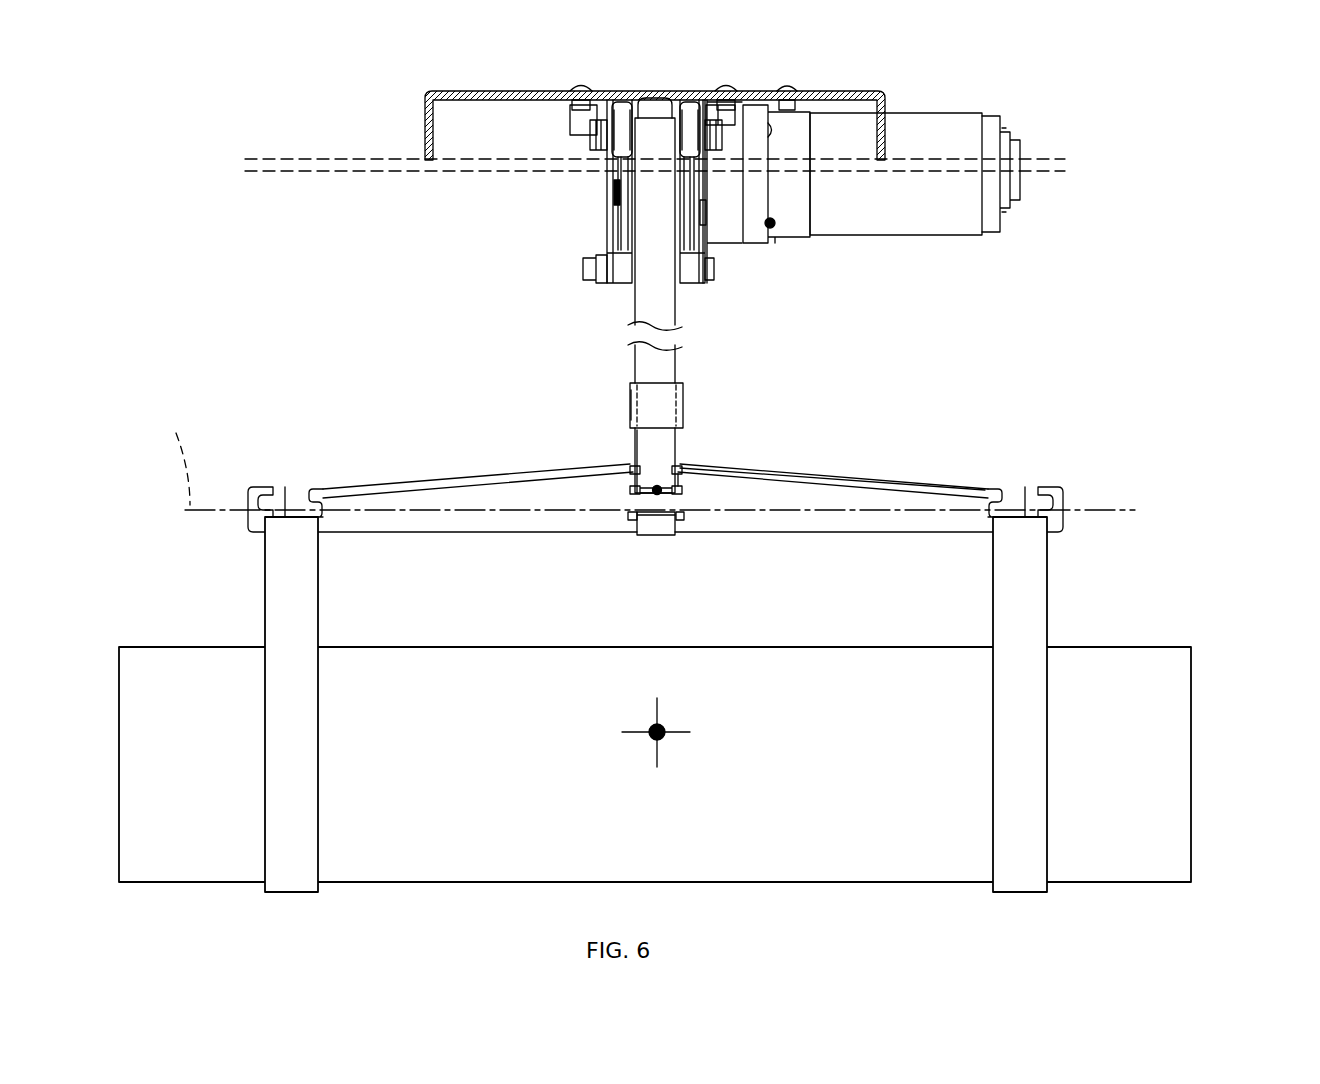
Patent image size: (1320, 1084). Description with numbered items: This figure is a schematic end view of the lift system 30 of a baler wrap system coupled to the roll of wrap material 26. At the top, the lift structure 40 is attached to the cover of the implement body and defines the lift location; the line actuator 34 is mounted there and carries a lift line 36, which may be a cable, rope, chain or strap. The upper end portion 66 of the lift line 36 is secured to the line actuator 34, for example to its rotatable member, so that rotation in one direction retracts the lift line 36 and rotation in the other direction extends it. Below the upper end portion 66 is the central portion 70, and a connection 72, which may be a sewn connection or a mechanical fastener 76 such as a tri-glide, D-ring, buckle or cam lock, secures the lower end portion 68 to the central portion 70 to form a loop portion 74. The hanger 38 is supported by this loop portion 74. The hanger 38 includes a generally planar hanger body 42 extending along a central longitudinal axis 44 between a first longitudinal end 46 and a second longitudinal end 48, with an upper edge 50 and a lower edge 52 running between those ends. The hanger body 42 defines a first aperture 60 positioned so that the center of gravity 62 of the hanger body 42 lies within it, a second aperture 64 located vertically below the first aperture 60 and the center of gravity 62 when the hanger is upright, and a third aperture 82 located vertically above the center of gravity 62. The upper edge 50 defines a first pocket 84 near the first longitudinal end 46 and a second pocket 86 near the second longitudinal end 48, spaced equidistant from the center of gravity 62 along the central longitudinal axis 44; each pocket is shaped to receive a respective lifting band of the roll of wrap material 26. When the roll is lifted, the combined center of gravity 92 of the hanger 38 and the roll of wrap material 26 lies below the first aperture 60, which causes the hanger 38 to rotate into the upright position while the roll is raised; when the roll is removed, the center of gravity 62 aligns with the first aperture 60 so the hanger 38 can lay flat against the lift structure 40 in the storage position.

The roll of wrap material 26 is at (1192, 798).
The lift system 30 is at (895, 255).
The line actuator 34 is at (933, 123).
The lift line 36 is at (678, 318).
The hanger 38 is at (905, 472).
The lift structure 40 is at (853, 98).
The hanger body 42 is at (848, 492).
The central longitudinal axis 44 is at (168, 454).
The first longitudinal end 46 is at (1063, 518).
The second longitudinal end 48 is at (250, 515).
The upper edge 50 is at (420, 482).
The lower edge 52 is at (438, 535).
The first aperture 60 is at (679, 491).
The center of gravity 62 is at (662, 490).
The second aperture 64 is at (679, 516).
The upper end portion 66 is at (652, 182).
The lower end portion 68 is at (657, 490).
The central portion 70 is at (668, 357).
The connection 72 is at (688, 402).
The loop portion 74 is at (652, 535).
The mechanical fastener 76 is at (630, 405).
The third aperture 82 is at (632, 468).
The first pocket 84 is at (1018, 485).
The second pocket 86 is at (292, 483).
The combined center of gravity 92 is at (664, 728).